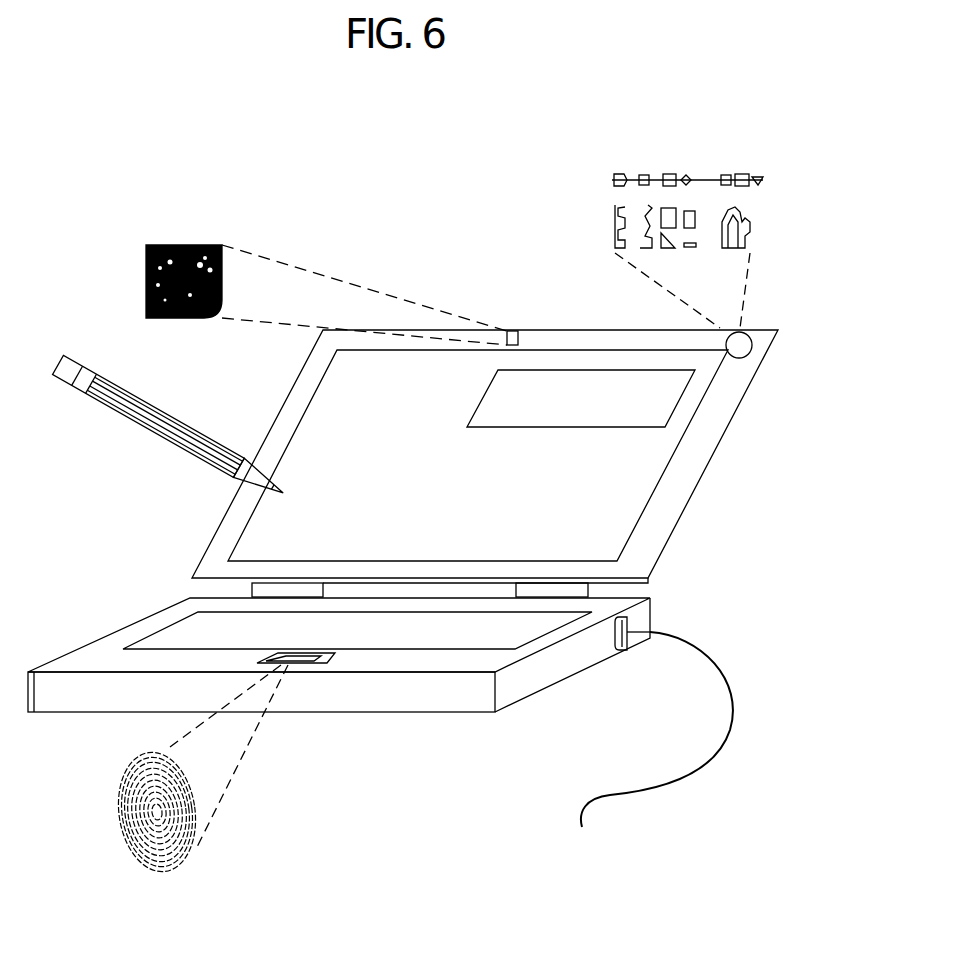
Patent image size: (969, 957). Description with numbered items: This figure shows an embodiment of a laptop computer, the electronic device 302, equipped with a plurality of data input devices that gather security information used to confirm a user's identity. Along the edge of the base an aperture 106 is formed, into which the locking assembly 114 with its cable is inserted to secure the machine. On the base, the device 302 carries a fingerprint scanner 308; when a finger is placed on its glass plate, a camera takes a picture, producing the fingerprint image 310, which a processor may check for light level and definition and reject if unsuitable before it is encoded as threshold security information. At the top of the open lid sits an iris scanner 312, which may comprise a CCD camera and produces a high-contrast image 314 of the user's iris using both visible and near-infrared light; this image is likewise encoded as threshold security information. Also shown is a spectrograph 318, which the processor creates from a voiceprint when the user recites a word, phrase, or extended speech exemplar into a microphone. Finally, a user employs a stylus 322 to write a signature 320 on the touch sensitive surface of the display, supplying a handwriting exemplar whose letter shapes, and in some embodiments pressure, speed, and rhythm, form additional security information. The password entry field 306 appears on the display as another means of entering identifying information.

The aperture 106 is at (626, 620).
The locking assembly 114 is at (706, 672).
The device 302 is at (379, 380).
The password entry field 306 is at (665, 418).
The fingerprint scanner 308 is at (316, 663).
The fingerprint image 310 is at (187, 853).
The iris scanner 312 is at (513, 330).
The high-contrast image 314 is at (181, 245).
The spectrograph 318 is at (667, 180).
The signature 320 is at (426, 493).
The stylus 322 is at (150, 432).